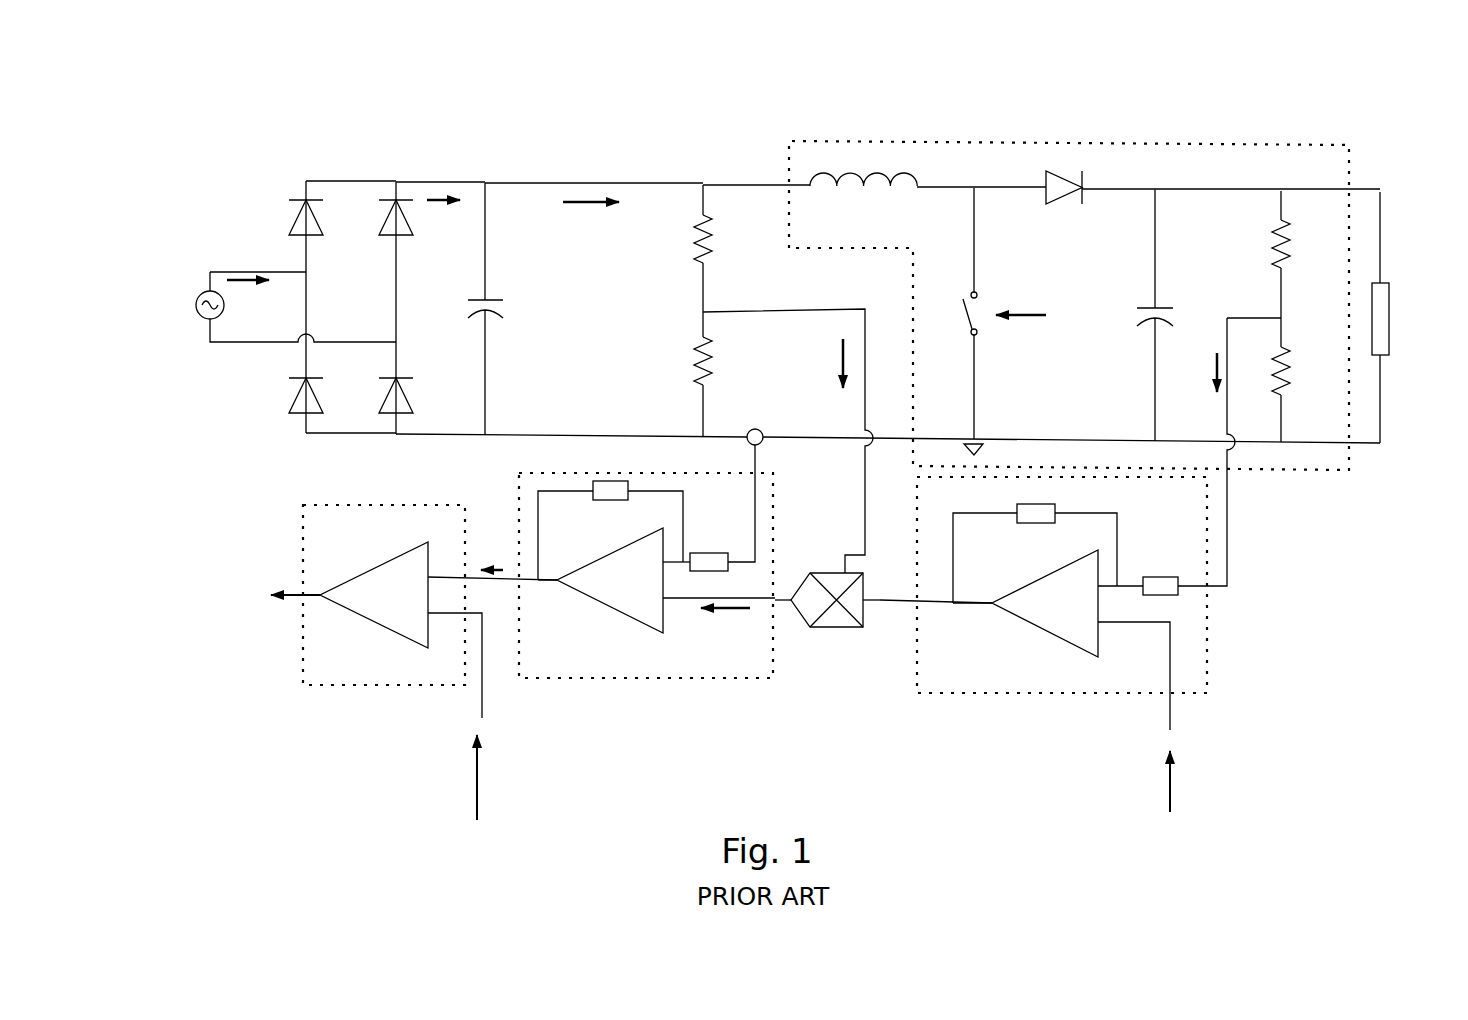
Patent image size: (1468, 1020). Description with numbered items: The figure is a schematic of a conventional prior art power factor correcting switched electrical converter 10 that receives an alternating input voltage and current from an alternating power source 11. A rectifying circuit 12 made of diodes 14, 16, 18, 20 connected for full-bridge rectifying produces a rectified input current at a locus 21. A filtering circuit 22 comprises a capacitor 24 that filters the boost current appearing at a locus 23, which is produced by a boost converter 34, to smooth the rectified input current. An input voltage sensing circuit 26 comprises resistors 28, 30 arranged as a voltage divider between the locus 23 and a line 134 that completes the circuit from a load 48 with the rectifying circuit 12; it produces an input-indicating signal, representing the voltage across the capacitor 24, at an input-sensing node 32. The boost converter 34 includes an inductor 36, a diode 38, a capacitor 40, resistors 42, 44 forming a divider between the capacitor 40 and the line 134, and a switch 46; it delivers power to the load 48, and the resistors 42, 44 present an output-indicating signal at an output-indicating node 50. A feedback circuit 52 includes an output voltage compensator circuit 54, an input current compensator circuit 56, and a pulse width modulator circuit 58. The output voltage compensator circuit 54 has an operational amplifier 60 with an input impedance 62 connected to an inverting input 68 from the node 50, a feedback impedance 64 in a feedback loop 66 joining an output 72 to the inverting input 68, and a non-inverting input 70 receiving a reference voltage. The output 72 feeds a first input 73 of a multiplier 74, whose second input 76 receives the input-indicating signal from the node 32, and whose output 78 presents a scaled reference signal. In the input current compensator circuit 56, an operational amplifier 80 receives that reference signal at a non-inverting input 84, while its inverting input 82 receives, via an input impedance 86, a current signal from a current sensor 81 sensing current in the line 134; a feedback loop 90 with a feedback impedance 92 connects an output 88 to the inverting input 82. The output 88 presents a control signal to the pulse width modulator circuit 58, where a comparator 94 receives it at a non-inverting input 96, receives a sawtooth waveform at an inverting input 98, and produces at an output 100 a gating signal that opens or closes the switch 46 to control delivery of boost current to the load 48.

The electrical converter 10 is at (1293, 609).
The alternating power source 11 is at (205, 325).
The rectifying circuit 12 is at (336, 284).
The diode 14 is at (287, 213).
The diode 16 is at (385, 216).
The diode 18 is at (288, 402).
The diode 20 is at (408, 405).
The locus 21 is at (443, 181).
The filtering circuit 22 is at (506, 170).
The locus 23 is at (575, 182).
The capacitor 24 is at (502, 312).
The input voltage sensing circuit 26 is at (736, 169).
The resistor 28 is at (693, 250).
The resistor 30 is at (693, 358).
The input-sensing node 32 is at (863, 468).
The boost converter 34 is at (1084, 263).
The inductor 36 is at (855, 188).
The diode 38 is at (1057, 205).
The capacitor 40 is at (1160, 298).
The resistor 42 is at (1275, 227).
The resistor 44 is at (1283, 387).
The switch 46 is at (978, 304).
The load 48 is at (1393, 310).
The output-indicating node 50 is at (1227, 478).
The feedback circuit 52 is at (1251, 706).
The output voltage compensator circuit 54 is at (1112, 644).
The input current compensator circuit 56 is at (665, 597).
The pulse width modulator circuit 58 is at (358, 650).
The operational amplifier 60 is at (1040, 630).
The input impedance 62 is at (1157, 575).
The feedback impedance 64 is at (1040, 525).
The feedback loop 66 is at (1083, 513).
The inverting input 68 is at (1088, 592).
The non-inverting input 70 is at (1102, 625).
The output 72 is at (990, 610).
The first input 73 is at (866, 606).
The multiplier 74 is at (860, 628).
The second input 76 is at (843, 570).
The output 78 is at (790, 612).
The operational amplifier 80 is at (638, 627).
The current sensor 81 is at (762, 431).
The inverting input 82 is at (667, 567).
The non-inverting input 84 is at (665, 602).
The input impedance 86 is at (700, 554).
The output 88 is at (561, 590).
The feedback loop 90 is at (683, 503).
The feedback impedance 92 is at (613, 502).
The comparator 94 is at (403, 640).
The non-inverting input 96 is at (432, 570).
The inverting input 98 is at (433, 618).
The output 100 is at (323, 585).
The line 134 is at (560, 436).